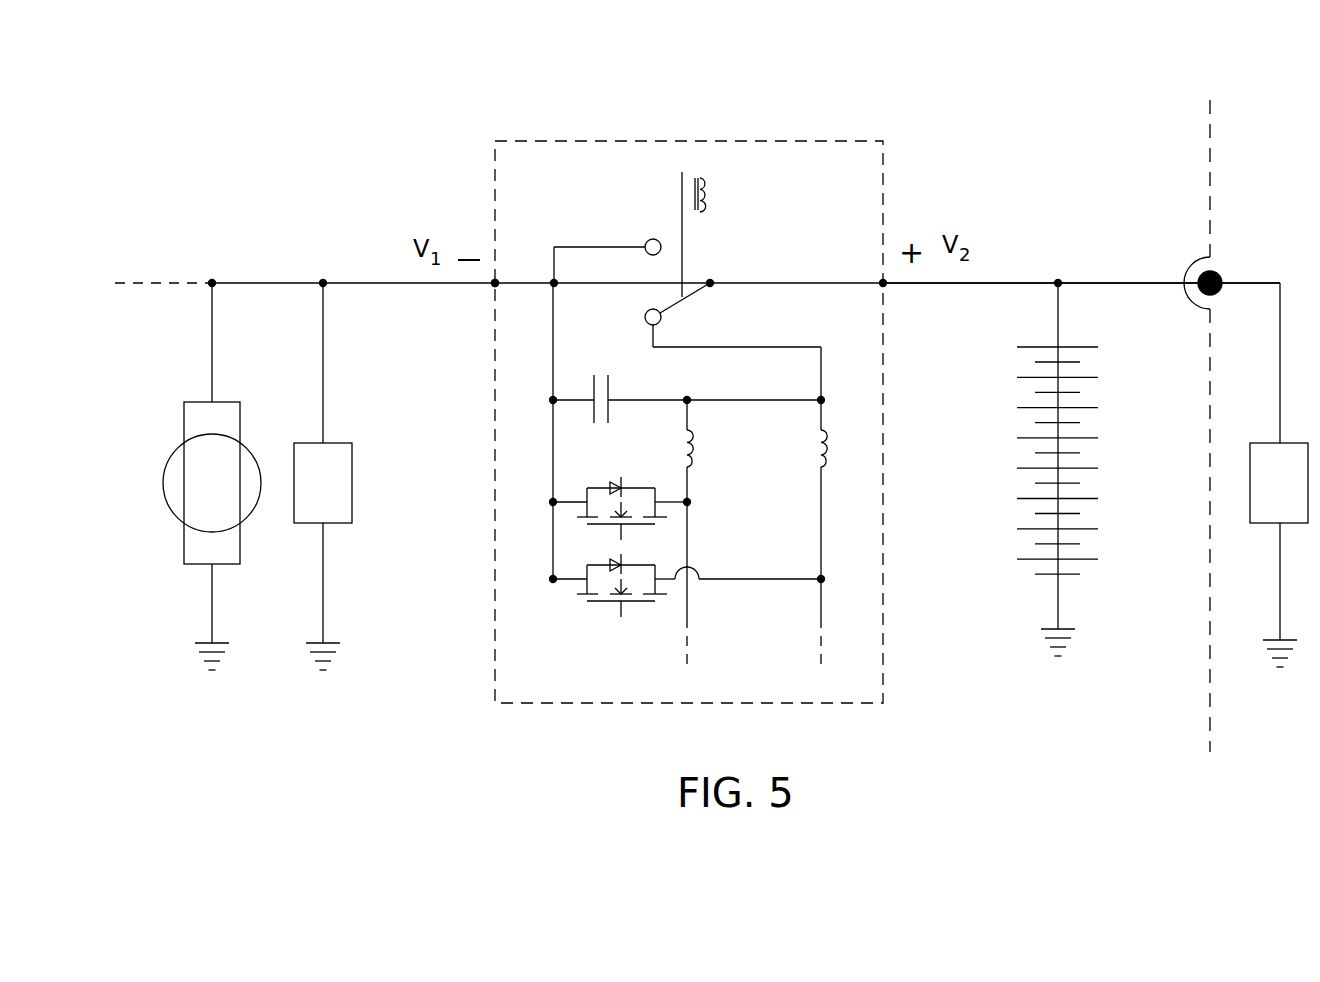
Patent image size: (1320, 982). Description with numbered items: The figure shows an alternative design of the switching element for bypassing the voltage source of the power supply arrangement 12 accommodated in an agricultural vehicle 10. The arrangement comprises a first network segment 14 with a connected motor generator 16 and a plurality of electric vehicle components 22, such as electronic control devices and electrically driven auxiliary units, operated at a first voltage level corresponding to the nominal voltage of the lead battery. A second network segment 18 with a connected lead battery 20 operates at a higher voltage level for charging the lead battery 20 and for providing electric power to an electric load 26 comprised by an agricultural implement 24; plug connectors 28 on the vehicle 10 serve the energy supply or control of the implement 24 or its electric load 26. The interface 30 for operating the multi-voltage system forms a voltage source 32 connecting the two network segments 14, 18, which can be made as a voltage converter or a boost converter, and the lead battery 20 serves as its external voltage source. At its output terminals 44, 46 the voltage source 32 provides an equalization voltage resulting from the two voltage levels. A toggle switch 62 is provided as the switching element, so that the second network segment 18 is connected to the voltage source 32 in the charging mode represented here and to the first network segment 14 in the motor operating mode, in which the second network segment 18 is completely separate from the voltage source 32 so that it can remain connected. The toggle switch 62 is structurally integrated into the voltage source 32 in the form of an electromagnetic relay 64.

The agricultural vehicle 10 is at (1184, 141).
The power supply arrangement 12 is at (213, 118).
The first network segment 14 is at (290, 283).
The motor generator 16 is at (230, 497).
The second network segment 18 is at (1080, 283).
The lead battery 20 is at (1108, 455).
The electric vehicle components 22 is at (341, 497).
The agricultural implement 24 is at (1268, 141).
The electric load 26 is at (1297, 497).
The plug connectors 28 is at (1198, 263).
The interface 30 is at (465, 118).
The voltage source 32 is at (884, 178).
The output terminal 44 is at (495, 284).
The output terminal 46 is at (883, 283).
The toggle switch 62 is at (650, 172).
The electromagnetic relay 64 is at (700, 180).